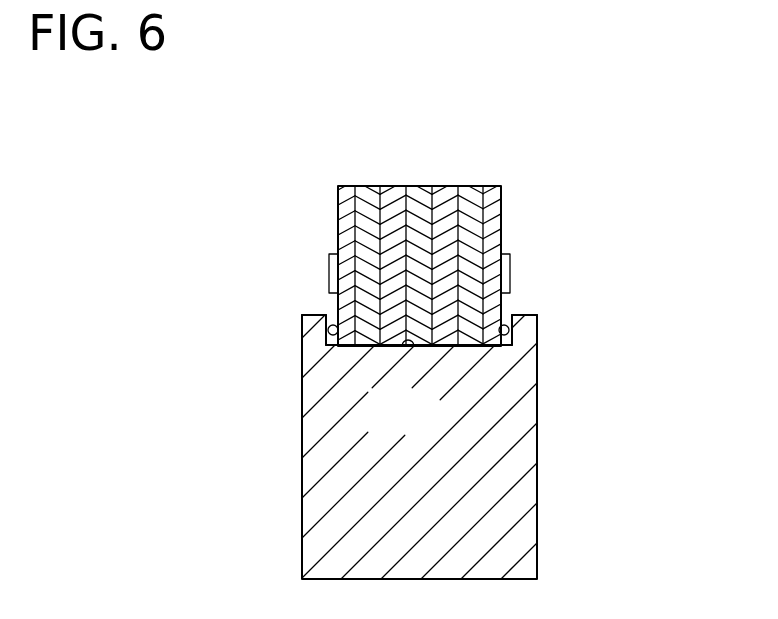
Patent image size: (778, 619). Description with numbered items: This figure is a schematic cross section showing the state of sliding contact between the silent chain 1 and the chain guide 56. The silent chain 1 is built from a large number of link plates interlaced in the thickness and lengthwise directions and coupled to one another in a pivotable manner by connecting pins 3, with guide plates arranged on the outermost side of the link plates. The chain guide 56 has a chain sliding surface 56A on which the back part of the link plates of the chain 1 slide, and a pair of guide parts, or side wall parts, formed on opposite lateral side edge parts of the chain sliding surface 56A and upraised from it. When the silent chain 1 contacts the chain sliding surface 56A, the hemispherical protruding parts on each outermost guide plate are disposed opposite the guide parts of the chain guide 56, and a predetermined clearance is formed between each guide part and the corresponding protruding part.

The silent chain 1 is at (426, 212).
The connecting pin 3 is at (503, 253).
The chain guide 56 is at (546, 487).
The chain sliding surface 56A is at (409, 351).